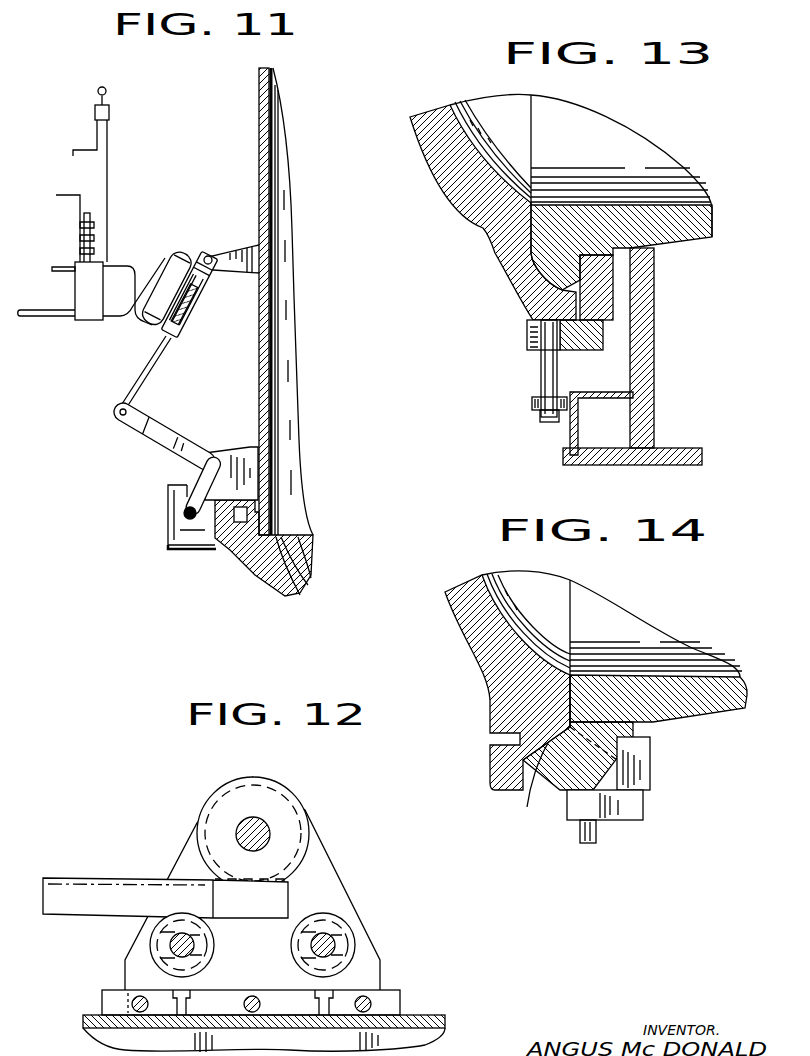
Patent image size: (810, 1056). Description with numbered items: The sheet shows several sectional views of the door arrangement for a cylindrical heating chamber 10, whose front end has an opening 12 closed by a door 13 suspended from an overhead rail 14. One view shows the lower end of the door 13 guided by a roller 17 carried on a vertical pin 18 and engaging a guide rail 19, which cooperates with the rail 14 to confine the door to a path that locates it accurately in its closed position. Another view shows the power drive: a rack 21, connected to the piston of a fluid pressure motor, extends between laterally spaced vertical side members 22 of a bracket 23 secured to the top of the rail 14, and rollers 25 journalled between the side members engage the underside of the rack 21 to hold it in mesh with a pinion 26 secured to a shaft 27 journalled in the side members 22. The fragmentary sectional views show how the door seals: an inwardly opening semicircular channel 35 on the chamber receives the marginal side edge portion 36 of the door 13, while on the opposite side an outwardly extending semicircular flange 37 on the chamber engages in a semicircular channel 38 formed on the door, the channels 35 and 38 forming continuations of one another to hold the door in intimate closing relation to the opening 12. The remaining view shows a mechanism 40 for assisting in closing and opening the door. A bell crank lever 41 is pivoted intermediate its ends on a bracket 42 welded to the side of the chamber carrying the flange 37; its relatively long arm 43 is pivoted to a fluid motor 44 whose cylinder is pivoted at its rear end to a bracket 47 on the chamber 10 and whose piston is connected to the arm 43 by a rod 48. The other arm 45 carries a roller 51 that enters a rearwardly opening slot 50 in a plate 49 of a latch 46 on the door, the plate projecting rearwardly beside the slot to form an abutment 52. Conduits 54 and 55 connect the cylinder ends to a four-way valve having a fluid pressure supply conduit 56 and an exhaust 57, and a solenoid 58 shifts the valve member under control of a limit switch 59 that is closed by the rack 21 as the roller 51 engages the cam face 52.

In FIG. 11, the heating chamber 10 is at (259, 102).
In FIG. 13, the heating chamber 10 is at (690, 232).
In FIG. 14, the heating chamber 10 is at (713, 702).
In FIG. 13, the opening 12 is at (557, 205).
In FIG. 14, the opening 12 is at (587, 675).
In FIG. 11, the door 13 is at (270, 560).
In FIG. 13, the door 13 is at (440, 193).
In FIG. 14, the door 13 is at (485, 632).
In FIG. 12, the rail 14 is at (433, 1018).
In FIG. 13, the roller 17 is at (532, 407).
In FIG. 13, the vertical pin 18 is at (552, 362).
In FIG. 14, the vertical pin 18 is at (597, 837).
In FIG. 13, the guide rail 19 is at (570, 430).
In FIG. 12, the rack 21 is at (112, 905).
In FIG. 12, the side members 22 is at (337, 902).
In FIG. 12, the bracket 23 is at (368, 991).
In FIG. 12, the rollers 25 is at (310, 943).
In FIG. 12, the pinion 26 is at (296, 833).
In FIG. 12, the shaft 27 is at (240, 822).
In FIG. 14, the semicircular channel 35 is at (574, 777).
In FIG. 14, the marginal side edge portion 36 is at (530, 740).
In FIG. 11, the semicircular flange 37 is at (244, 520).
In FIG. 13, the semicircular flange 37 is at (540, 270).
In FIG. 11, the semicircular channel 38 is at (234, 535).
In FIG. 13, the semicircular channel 38 is at (605, 303).
In FIG. 11, the mechanism 40 is at (221, 284).
In FIG. 11, the bell crank lever 41 is at (173, 434).
In FIG. 11, the bracket 42 is at (242, 451).
In FIG. 11, the long arm 43 is at (122, 420).
In FIG. 11, the fluid motor 44 is at (187, 320).
In FIG. 11, the arm 45 is at (200, 488).
In FIG. 11, the latch 46 is at (180, 520).
In FIG. 11, the bracket 47 is at (223, 253).
In FIG. 11, the rod 48 is at (128, 394).
In FIG. 11, the plate 49 is at (182, 540).
In FIG. 11, the slot 50 is at (185, 503).
In FIG. 11, the roller 51 is at (193, 537).
In FIG. 11, the abutment 52 is at (175, 490).
In FIG. 11, the conduit 54 is at (183, 263).
In FIG. 11, the conduit 55 is at (157, 328).
In FIG. 11, the fluid pressure supply conduit 56 is at (72, 320).
In FIG. 11, the exhaust 57 is at (70, 270).
In FIG. 11, the solenoid 58 is at (83, 233).
In FIG. 11, the limit switch 59 is at (110, 113).